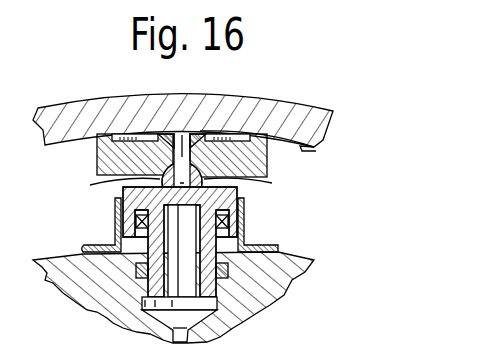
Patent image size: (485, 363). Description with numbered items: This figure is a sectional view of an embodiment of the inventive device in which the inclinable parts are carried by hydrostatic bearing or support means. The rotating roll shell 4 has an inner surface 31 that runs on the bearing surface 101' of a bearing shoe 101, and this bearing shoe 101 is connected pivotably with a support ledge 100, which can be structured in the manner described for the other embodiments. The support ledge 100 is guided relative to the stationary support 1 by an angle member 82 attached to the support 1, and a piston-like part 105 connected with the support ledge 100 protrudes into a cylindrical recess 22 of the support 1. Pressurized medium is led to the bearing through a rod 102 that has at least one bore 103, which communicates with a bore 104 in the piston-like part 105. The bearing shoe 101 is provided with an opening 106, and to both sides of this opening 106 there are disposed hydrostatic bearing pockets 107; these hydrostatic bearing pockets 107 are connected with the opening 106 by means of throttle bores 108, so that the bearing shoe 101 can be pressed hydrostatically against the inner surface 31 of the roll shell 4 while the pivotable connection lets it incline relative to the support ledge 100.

The support 1 is at (295, 256).
The roll shell 4 is at (62, 110).
The cylindrical recess 22 is at (207, 302).
The inner surface of the roll shell 31 is at (316, 151).
The angle member 82 is at (117, 212).
The support ledge 100 is at (220, 201).
The bearing shoe 101 is at (268, 159).
The bearing surface 101' is at (290, 123).
The rod 102 is at (163, 174).
The bore 103 is at (205, 179).
The bore 104 is at (241, 238).
The piston-like part 105 is at (122, 247).
The opening 106 is at (208, 97).
The hydrostatic bearing pocket 107 is at (113, 146).
The throttle bore 108 is at (168, 146).